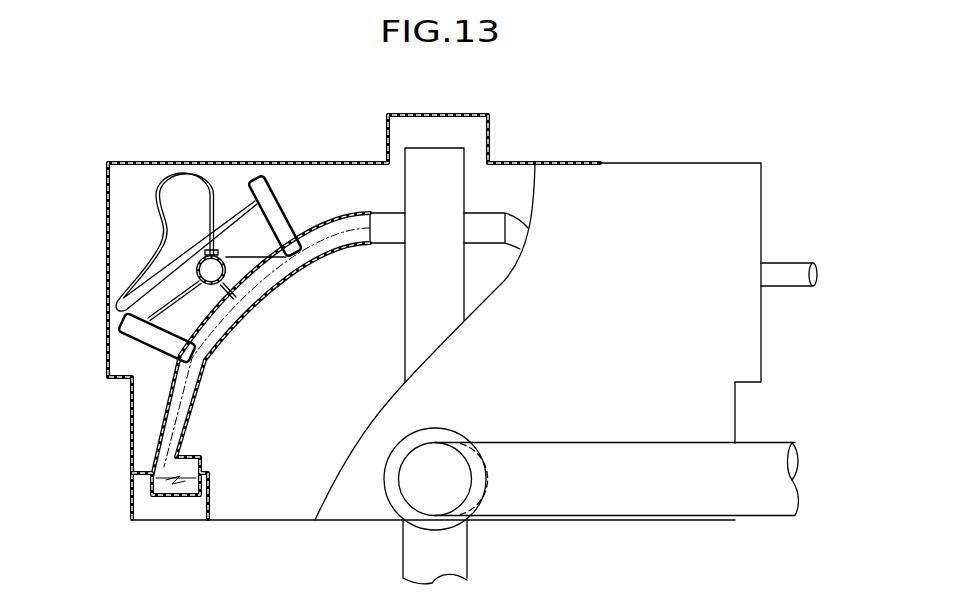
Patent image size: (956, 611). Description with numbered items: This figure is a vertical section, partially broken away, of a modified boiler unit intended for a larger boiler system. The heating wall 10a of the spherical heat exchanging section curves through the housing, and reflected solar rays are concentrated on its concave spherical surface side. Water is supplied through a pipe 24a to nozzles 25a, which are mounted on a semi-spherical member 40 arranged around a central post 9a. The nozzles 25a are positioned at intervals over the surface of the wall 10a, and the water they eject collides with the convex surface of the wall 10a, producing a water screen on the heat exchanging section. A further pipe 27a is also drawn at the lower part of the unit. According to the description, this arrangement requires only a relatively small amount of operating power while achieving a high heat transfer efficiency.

The post 9a is at (442, 294).
The wall 10a is at (248, 313).
The pipe 24a is at (783, 263).
The nozzles 25a is at (289, 209).
The pipe 27a is at (577, 518).
The semi-spherical member 40 is at (157, 421).